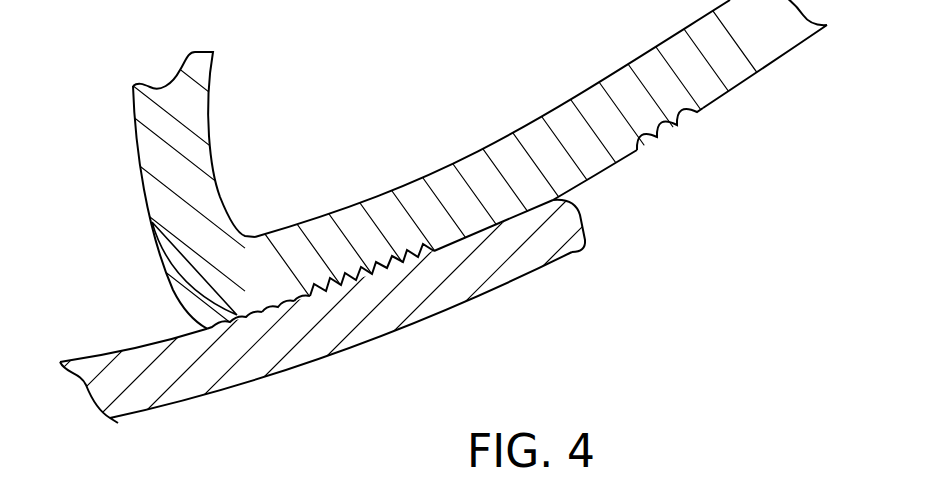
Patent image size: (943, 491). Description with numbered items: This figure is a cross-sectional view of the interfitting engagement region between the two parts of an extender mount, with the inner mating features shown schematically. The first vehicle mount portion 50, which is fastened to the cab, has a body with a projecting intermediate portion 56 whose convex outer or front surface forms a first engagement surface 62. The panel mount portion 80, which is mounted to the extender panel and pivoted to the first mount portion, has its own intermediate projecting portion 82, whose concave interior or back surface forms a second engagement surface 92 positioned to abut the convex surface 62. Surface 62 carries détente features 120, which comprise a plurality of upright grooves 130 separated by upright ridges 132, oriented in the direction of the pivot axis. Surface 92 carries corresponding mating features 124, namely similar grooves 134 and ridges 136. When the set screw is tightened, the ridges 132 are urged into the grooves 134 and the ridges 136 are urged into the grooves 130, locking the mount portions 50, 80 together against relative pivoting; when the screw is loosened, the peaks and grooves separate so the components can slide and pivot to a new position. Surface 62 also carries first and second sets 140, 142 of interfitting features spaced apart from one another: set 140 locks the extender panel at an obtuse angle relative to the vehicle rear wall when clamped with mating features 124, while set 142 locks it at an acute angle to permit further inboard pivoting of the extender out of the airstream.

The first vehicle mount portion 50 is at (588, 186).
The projecting intermediate portion 56 is at (415, 203).
The first engagement surface 62 is at (617, 162).
The panel mount portion 80 is at (192, 405).
The intermediate projecting portion 82 is at (415, 312).
The second engagement surface 92 is at (181, 336).
The détente features 120 is at (250, 318).
The mating features 124 is at (316, 298).
The grooves 130 is at (252, 318).
The ridges 132 is at (247, 318).
The grooves 134 is at (313, 302).
The ridges 136 is at (293, 320).
The first set of interfitting features 140 is at (400, 268).
The second set of interfitting features 142 is at (683, 130).